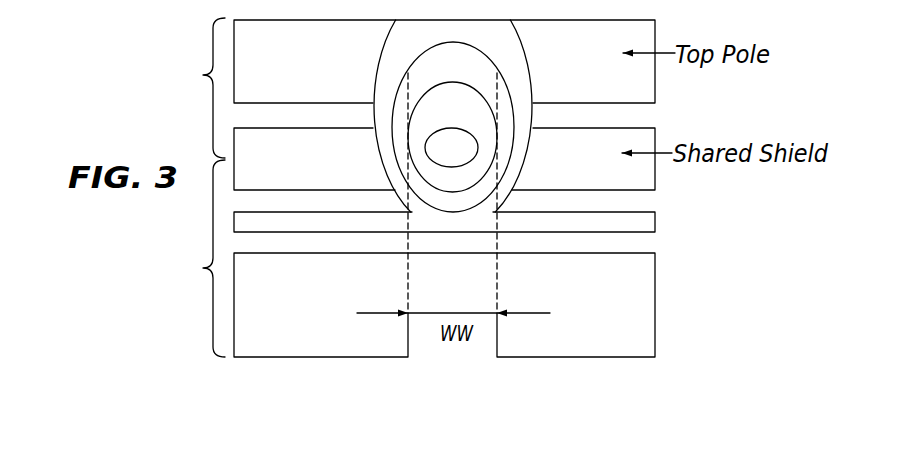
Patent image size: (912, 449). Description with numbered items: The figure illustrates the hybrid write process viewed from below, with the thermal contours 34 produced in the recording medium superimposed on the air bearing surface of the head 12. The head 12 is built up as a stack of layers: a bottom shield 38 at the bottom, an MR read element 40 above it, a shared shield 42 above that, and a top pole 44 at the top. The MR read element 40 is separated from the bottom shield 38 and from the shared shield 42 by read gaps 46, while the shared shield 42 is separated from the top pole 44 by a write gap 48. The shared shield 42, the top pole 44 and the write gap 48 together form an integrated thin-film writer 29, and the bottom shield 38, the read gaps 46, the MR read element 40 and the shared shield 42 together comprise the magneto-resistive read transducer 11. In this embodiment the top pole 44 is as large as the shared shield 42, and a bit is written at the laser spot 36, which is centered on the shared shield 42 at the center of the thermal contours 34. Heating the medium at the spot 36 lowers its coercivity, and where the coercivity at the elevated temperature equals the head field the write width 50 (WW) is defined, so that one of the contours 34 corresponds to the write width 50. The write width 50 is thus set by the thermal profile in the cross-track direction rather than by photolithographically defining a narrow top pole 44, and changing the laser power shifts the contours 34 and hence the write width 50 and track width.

The head 12 is at (677, 299).
The integrated thin-film writer 29 is at (196, 88).
The magneto-resistive read transducer 11 is at (200, 258).
The top pole 44 is at (655, 33).
The shared shield 42 is at (655, 178).
The write gap 48 is at (640, 118).
The thermal contours 34 is at (373, 118).
The laser spot 36 is at (460, 143).
The read gaps 46 is at (638, 203).
The MR read element 40 is at (517, 232).
The bottom shield 38 is at (262, 358).
The write width 50 is at (373, 315).